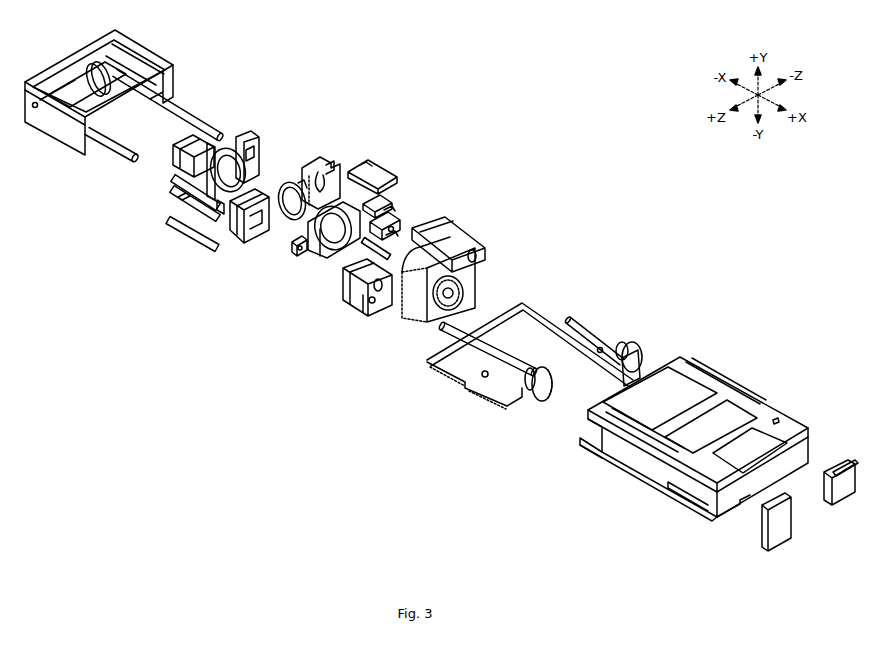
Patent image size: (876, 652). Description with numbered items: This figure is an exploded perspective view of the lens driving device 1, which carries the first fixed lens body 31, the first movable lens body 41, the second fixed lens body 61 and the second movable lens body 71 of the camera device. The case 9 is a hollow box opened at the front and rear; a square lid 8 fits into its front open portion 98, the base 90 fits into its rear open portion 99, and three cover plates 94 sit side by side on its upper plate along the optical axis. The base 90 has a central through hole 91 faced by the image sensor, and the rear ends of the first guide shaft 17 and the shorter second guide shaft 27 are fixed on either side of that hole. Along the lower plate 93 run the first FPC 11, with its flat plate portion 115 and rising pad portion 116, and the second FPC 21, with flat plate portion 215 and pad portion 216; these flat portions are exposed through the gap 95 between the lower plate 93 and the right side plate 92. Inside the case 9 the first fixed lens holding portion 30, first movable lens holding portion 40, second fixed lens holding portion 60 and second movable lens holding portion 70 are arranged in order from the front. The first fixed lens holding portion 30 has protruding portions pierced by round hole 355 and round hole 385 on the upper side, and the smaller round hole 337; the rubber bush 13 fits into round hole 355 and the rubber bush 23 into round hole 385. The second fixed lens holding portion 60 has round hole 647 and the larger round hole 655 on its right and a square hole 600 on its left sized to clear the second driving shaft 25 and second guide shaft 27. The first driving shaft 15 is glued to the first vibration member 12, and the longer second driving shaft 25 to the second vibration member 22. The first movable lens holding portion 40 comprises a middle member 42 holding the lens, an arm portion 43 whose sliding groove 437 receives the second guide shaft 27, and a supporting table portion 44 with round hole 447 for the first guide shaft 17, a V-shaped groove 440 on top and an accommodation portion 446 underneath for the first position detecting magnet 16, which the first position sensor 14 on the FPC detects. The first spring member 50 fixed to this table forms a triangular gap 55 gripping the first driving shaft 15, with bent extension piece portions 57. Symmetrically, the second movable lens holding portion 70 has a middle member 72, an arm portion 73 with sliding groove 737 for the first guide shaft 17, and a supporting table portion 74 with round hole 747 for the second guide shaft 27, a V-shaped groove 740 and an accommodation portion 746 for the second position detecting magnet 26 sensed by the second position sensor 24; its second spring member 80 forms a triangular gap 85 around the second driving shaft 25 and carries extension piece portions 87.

The lens driving device 1 is at (577, 163).
The square lid 8 is at (777, 532).
The case 9 is at (750, 383).
The first FPC 11 is at (647, 360).
The first vibration member 12 is at (638, 347).
The rubber bush 13 is at (623, 345).
The first position sensor 14 is at (600, 347).
The first driving shaft 15 is at (573, 320).
The first position detecting magnet 16 is at (390, 247).
The first guide shaft 17 is at (187, 100).
The second FPC 21 is at (535, 413).
The second vibration member 22 is at (541, 384).
The rubber bush 23 is at (528, 372).
The second position sensor 24 is at (480, 377).
The second driving shaft 25 is at (442, 328).
The second position detecting magnet 26 is at (187, 237).
The second guide shaft 27 is at (107, 147).
The first fixed lens holding portion 30 is at (475, 228).
The first fixed lens body 31 is at (470, 288).
The first movable lens holding portion 40 is at (283, 258).
The first movable lens body 41 is at (337, 267).
The middle member 42 is at (317, 260).
The arm portion 43 is at (294, 258).
The supporting table portion 44 is at (395, 218).
The first spring member 50 is at (400, 180).
The triangular gap 55 is at (394, 198).
The extension piece portion 57 is at (387, 160).
The second fixed lens holding portion 60 is at (330, 151).
The second fixed lens body 61 is at (285, 227).
The second movable lens holding portion 70 is at (248, 134).
The second movable lens body 71 is at (250, 170).
The middle member 72 is at (250, 184).
The arm portion 73 is at (256, 143).
The supporting table portion 74 is at (172, 188).
The second spring member 80 is at (164, 160).
The triangular gap 85 is at (222, 145).
The extension piece portion 87 is at (176, 141).
The base 90 is at (66, 50).
The through hole 91 is at (100, 92).
The side plate 92 is at (670, 484).
The lower plate 93 is at (727, 519).
The cover plate 94 is at (687, 393).
The gap 95 is at (622, 470).
The open portion 98 is at (800, 475).
The open portion 99 is at (590, 433).
The flat plate portion 115 is at (552, 330).
The pad portion 116 is at (633, 365).
The flat plate portion 215 is at (493, 392).
The pad portion 216 is at (552, 382).
The round hole 337 is at (380, 310).
The round hole 355 is at (487, 257).
The round hole 385 is at (362, 300).
The sliding groove 437 is at (290, 262).
The V-shaped groove 440 is at (390, 212).
The accommodation portion 446 is at (397, 226).
The round hole 447 is at (397, 232).
The square hole 600 is at (263, 240).
The round hole 647 is at (312, 170).
The round hole 655 is at (320, 160).
The sliding groove 737 is at (252, 160).
The V-shaped groove 740 is at (193, 178).
The accommodation portion 746 is at (177, 201).
The round hole 747 is at (222, 213).